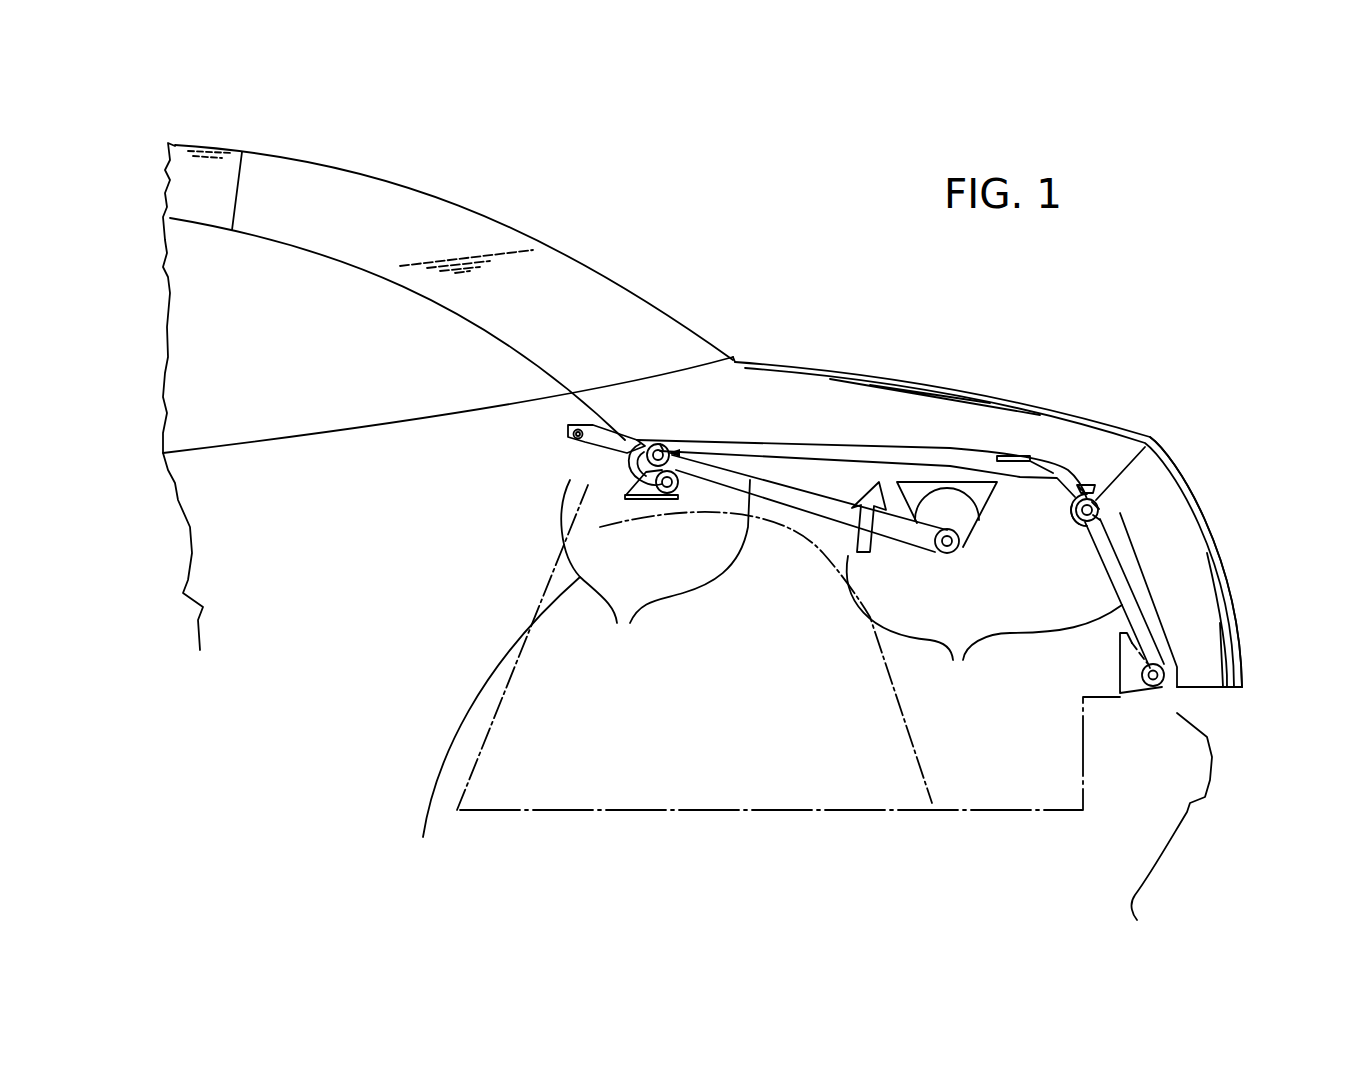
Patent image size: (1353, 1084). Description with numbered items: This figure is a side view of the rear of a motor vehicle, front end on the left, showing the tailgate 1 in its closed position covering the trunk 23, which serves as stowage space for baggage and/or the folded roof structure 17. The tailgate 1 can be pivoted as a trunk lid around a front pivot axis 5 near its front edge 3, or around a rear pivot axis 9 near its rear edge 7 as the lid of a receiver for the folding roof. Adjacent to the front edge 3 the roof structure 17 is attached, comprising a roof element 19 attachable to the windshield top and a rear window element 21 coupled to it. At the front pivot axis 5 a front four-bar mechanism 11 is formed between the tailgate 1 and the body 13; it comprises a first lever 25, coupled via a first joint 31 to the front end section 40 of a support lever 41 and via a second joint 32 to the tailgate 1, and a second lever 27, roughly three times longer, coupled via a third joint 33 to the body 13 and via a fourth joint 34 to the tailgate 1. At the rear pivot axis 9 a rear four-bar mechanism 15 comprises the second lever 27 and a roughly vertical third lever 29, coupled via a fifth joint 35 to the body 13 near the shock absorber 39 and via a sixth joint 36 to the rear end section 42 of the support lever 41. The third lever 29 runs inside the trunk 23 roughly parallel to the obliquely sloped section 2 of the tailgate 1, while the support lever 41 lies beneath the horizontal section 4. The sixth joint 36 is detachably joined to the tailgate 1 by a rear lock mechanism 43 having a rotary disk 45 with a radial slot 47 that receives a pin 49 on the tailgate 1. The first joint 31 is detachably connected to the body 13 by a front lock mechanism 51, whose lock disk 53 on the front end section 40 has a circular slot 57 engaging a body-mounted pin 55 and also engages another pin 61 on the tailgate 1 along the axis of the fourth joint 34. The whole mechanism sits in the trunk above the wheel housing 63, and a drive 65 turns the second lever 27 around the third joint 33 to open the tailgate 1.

The tailgate 1 is at (1006, 390).
The section 2 is at (1207, 557).
The front edge 3 is at (578, 398).
The horizontal section 4 is at (870, 378).
The front pivot axis 5 is at (742, 414).
The rear edge 7 is at (1182, 464).
The rear pivot axis 9 is at (1175, 662).
The front four-bar mechanism 11 is at (586, 658).
The body 13 is at (1003, 772).
The rear four-bar mechanism 15 is at (984, 619).
The roof structure 17 is at (226, 150).
The roof element 19 is at (200, 173).
The rear window element 21 is at (455, 237).
The trunk 23 is at (988, 609).
The first lever 25 is at (597, 455).
The second lever 27 is at (805, 500).
The third lever 29 is at (1115, 580).
The first joint 31 is at (667, 480).
The second joint 32 is at (556, 436).
The third joint 33 is at (944, 520).
The fourth joint 34 is at (713, 442).
The fifth joint 35 is at (1167, 690).
The sixth joint 36 is at (1119, 501).
The shock absorber 39 is at (1198, 768).
The front end section 40 is at (703, 470).
The support lever 41 is at (874, 466).
The rear end section 42 is at (1071, 506).
The rear lock mechanism 43 is at (1115, 475).
The rotary disk 45 is at (1097, 483).
The radial slot 47 is at (1100, 520).
The pin 49 is at (1074, 482).
The front lock mechanism 51 is at (650, 420).
The lock disk 53 is at (586, 482).
The pin 55 is at (655, 478).
The circular slot 57 is at (642, 482).
The pin 61 is at (660, 444).
The wheel housing 63 is at (910, 745).
The electric motor drive or hydraulic drive 65 is at (868, 548).